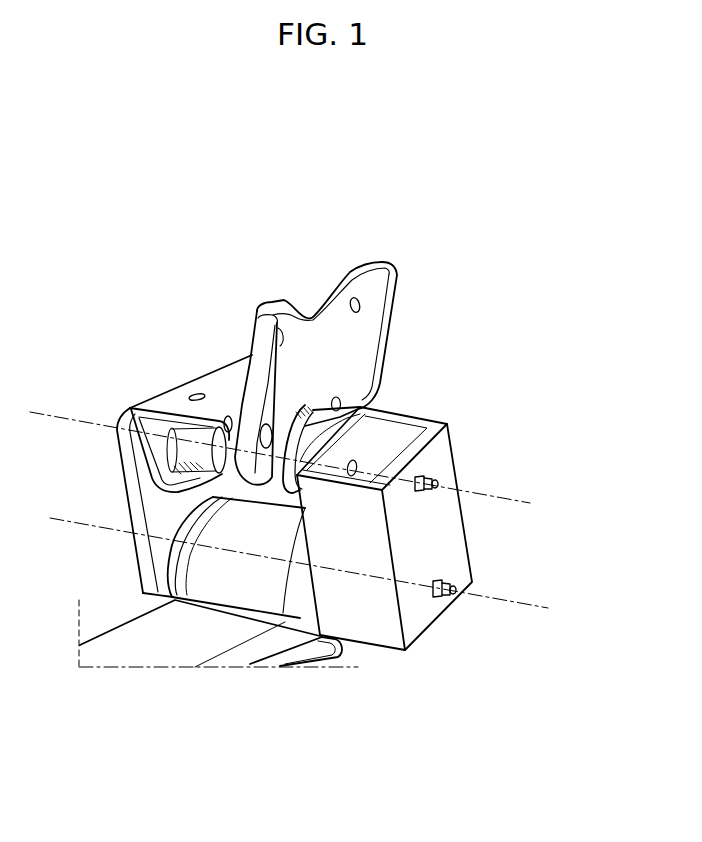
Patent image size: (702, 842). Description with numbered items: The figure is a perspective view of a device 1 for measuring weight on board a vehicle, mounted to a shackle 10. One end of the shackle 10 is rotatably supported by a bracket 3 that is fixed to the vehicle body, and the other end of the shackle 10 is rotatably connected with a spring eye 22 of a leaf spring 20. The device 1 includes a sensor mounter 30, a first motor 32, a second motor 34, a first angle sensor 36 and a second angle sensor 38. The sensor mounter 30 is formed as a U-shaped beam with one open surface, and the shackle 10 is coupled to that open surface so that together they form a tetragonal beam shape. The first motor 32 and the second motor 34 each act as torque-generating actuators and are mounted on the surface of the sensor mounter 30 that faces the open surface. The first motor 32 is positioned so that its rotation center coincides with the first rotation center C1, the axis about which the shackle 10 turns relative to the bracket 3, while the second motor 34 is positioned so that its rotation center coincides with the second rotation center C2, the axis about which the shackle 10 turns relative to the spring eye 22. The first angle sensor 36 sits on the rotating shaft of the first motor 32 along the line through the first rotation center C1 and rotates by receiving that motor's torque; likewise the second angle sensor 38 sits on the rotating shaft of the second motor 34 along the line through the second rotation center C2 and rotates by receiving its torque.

The device for measuring weight on board 1 is at (435, 342).
The bracket 3 is at (300, 343).
The shackle 10 is at (358, 442).
The leaf spring 20 is at (140, 650).
The spring eye 22 is at (242, 585).
The sensor mounter 30 is at (372, 620).
The first motor 32 is at (425, 480).
The second motor 34 is at (430, 600).
The first angle sensor 36 is at (440, 482).
The second angle sensor 38 is at (453, 584).
The first rotation center C1 is at (295, 464).
The second rotation center C2 is at (313, 570).